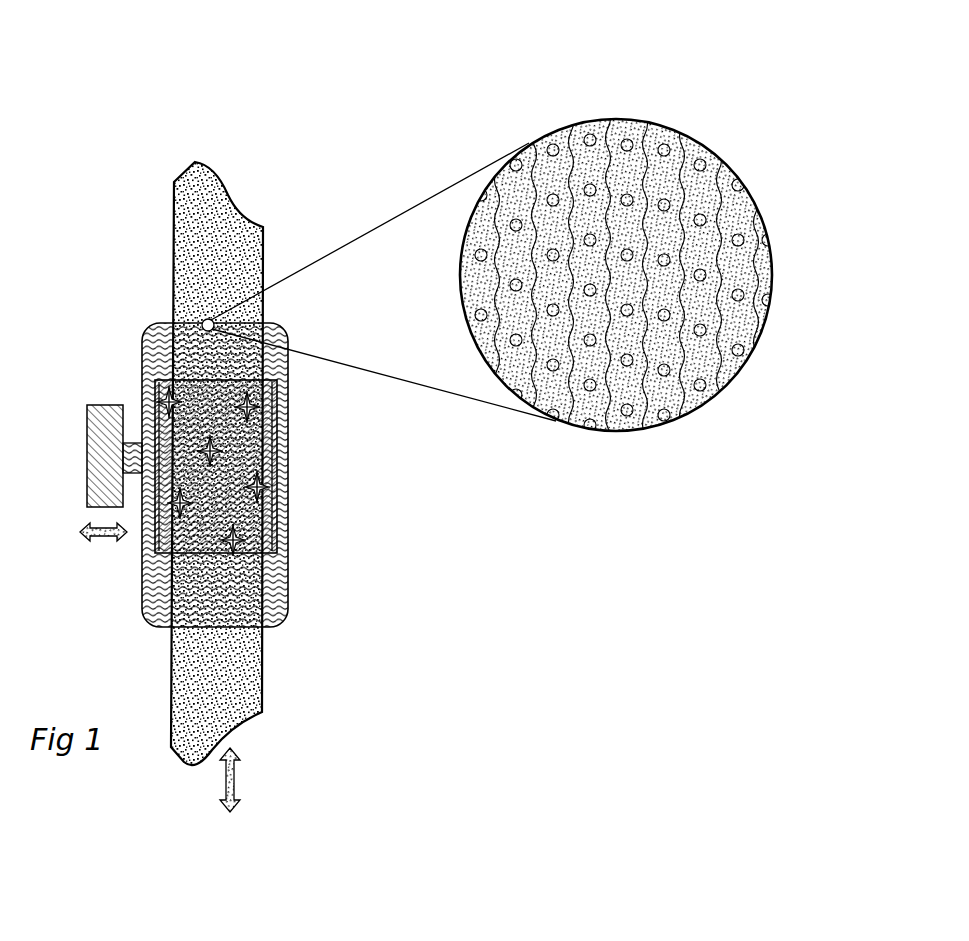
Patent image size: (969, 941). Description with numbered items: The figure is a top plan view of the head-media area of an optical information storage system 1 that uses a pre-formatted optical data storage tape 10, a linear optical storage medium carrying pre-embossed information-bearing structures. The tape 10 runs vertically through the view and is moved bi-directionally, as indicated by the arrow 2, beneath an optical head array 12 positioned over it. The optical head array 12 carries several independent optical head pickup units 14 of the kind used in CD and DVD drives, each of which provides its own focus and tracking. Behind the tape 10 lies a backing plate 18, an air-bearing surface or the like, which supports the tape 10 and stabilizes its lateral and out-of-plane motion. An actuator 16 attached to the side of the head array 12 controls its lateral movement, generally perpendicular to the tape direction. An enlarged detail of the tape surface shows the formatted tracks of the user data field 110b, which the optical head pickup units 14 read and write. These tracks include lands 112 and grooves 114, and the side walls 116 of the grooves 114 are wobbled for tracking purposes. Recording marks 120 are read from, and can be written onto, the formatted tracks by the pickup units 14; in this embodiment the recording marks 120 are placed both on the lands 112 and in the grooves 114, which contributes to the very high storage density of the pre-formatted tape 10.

The optical information storage system 1 is at (368, 104).
The arrow 2 is at (243, 784).
The pre-formatted optical data storage tape 10 is at (272, 597).
The optical head array 12 is at (286, 461).
The optical head pickup units 14 is at (220, 448).
The actuator 16 is at (78, 400).
The backing plate 18 is at (292, 542).
The user data field 110b is at (735, 149).
The lands 112 is at (604, 428).
The grooves 114 is at (686, 421).
The side walls 116 is at (634, 127).
The recording marks 120 is at (758, 194).